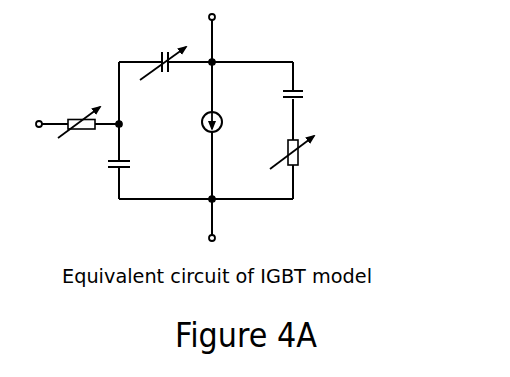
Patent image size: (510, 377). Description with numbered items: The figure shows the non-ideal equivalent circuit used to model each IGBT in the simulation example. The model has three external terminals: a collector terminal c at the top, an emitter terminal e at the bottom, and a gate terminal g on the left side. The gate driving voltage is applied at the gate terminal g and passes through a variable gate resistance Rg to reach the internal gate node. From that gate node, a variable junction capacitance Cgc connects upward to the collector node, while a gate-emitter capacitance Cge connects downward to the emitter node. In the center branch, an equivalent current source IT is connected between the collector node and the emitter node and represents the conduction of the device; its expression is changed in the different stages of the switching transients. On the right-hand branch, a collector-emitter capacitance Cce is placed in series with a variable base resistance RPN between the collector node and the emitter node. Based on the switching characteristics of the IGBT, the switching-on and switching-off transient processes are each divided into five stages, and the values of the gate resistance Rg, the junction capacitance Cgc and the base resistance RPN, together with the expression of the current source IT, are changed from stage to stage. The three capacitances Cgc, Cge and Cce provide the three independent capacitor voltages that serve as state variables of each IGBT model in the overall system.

The collector terminal c is at (218, 18).
The emitter terminal e is at (218, 239).
The gate terminal g is at (46, 131).
The gate resistance Rg is at (88, 112).
The junction capacitance Cgc is at (163, 72).
The gate-emitter capacitance Cge is at (132, 166).
The collector-emitter capacitance Cce is at (307, 97).
The equivalent current source IT is at (222, 122).
The base resistance RPN is at (301, 152).